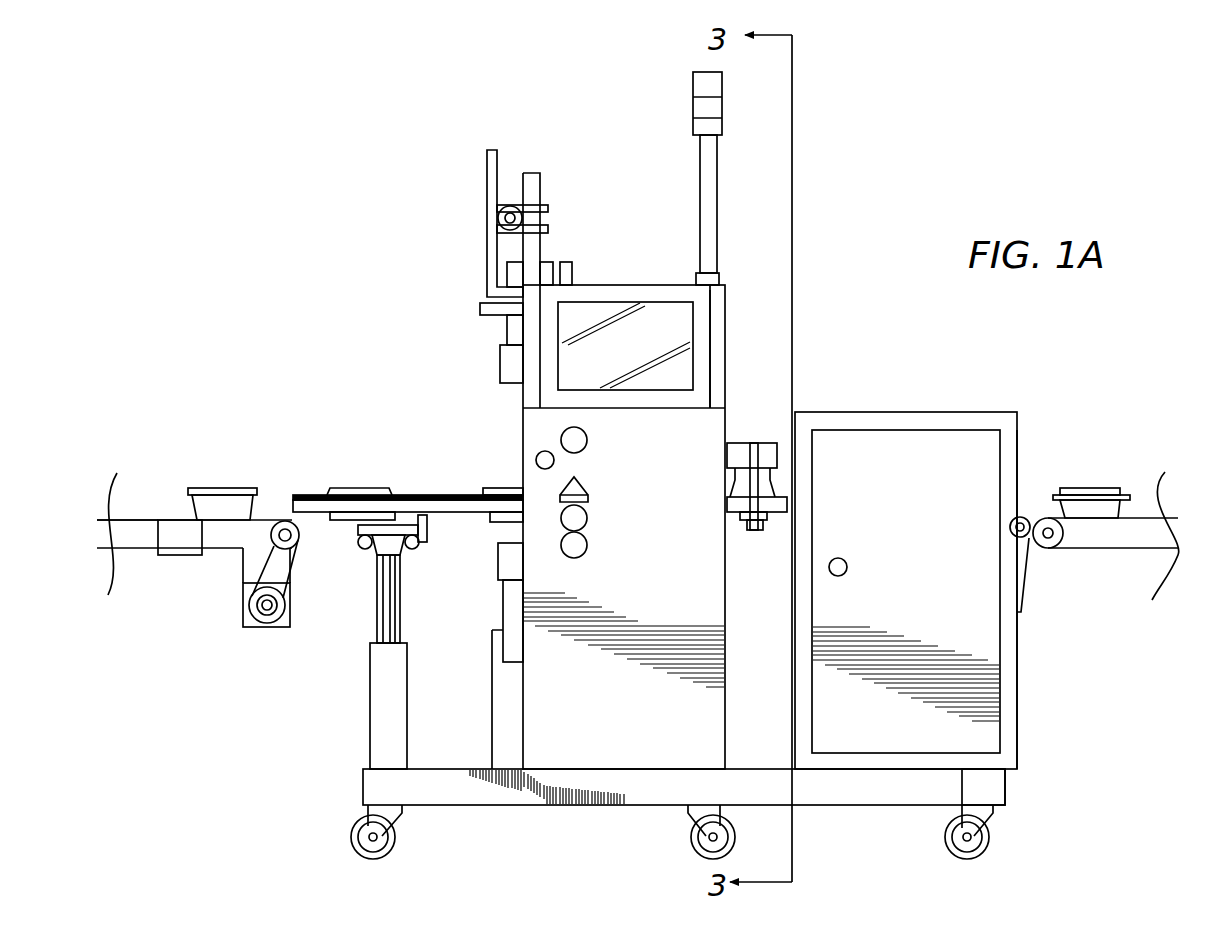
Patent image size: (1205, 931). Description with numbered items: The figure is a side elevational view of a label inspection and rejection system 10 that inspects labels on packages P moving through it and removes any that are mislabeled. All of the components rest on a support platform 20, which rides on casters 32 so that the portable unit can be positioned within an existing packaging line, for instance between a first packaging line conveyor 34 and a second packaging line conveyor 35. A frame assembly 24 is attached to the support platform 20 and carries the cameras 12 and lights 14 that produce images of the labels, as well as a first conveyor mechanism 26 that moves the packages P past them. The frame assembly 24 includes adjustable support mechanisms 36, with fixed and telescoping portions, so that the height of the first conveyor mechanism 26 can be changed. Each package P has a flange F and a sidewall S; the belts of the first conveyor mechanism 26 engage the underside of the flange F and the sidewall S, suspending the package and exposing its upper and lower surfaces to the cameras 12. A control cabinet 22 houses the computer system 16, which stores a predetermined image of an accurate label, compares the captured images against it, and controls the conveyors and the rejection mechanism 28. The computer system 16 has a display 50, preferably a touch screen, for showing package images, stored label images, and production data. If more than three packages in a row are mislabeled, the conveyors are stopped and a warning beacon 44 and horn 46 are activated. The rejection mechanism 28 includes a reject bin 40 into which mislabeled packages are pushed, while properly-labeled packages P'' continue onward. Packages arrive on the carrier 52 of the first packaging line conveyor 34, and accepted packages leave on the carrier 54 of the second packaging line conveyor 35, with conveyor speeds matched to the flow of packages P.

The label inspection and rejection system 10 is at (385, 385).
The cameras 12 is at (508, 330).
The lights 14 is at (505, 372).
The computer system 16 is at (727, 403).
The support platform 20 is at (840, 806).
The control cabinet 22 is at (722, 704).
The frame assembly 24 is at (484, 216).
The first conveyor mechanism 26 is at (312, 490).
The rejection mechanism 28 is at (893, 411).
The casters 32 is at (368, 857).
The first packaging line conveyor 34 is at (177, 562).
The second packaging line conveyor 35 is at (1073, 556).
The adjustable support mechanisms 36 is at (378, 695).
The reject bin 40 is at (1015, 468).
The warning beacon 44 is at (693, 100).
The horn 46 is at (700, 130).
The display 50 is at (660, 303).
The carrier 52 is at (143, 520).
The carrier 54 is at (1118, 548).
The flange F is at (268, 492).
The packages P is at (282, 462).
The properly-labeled packages P'' is at (1118, 463).
The sidewall S is at (292, 548).